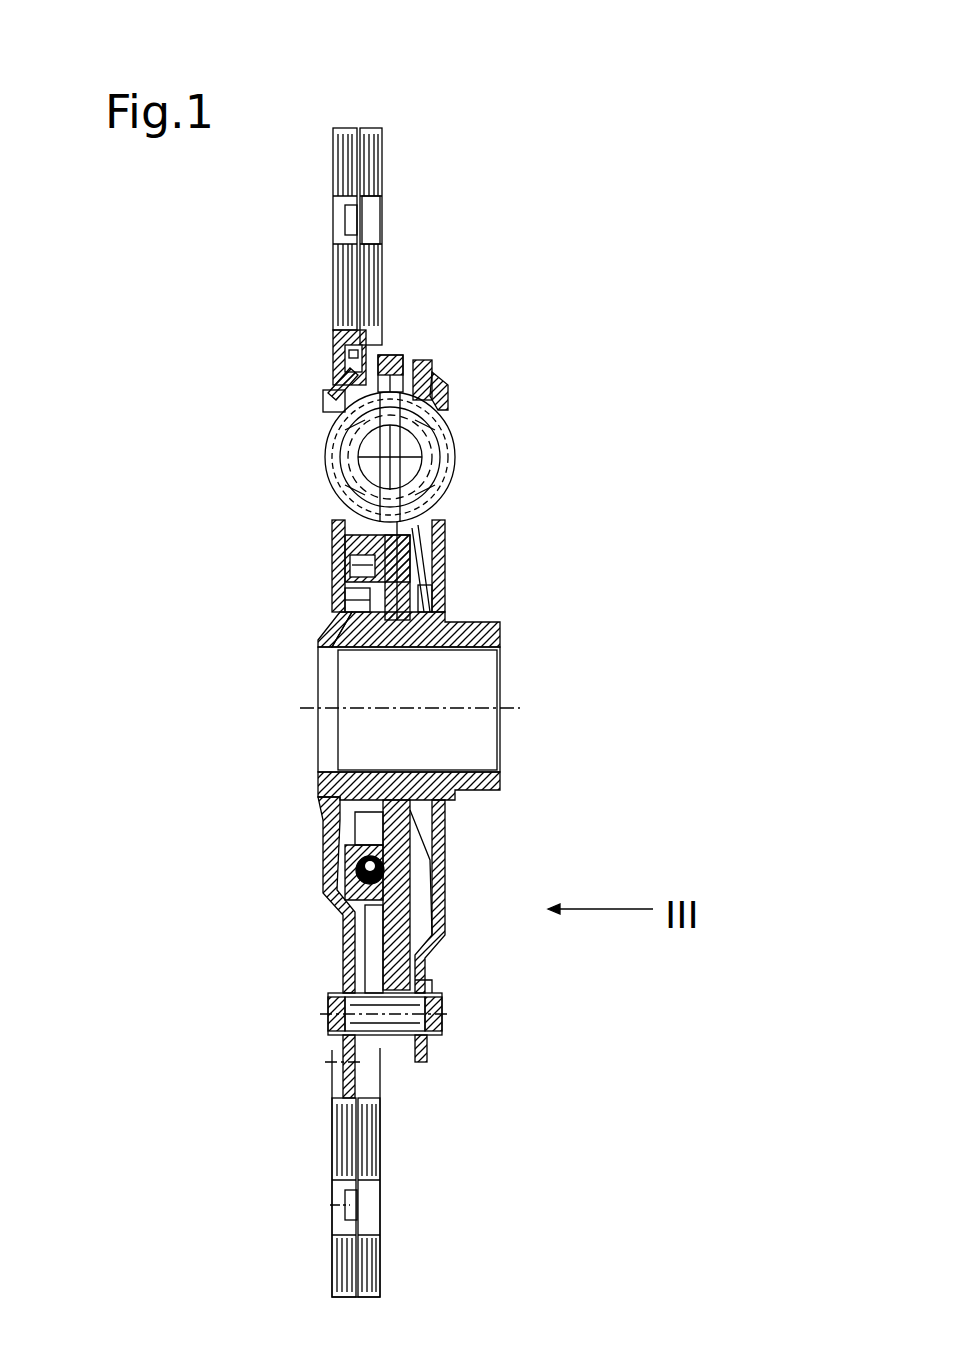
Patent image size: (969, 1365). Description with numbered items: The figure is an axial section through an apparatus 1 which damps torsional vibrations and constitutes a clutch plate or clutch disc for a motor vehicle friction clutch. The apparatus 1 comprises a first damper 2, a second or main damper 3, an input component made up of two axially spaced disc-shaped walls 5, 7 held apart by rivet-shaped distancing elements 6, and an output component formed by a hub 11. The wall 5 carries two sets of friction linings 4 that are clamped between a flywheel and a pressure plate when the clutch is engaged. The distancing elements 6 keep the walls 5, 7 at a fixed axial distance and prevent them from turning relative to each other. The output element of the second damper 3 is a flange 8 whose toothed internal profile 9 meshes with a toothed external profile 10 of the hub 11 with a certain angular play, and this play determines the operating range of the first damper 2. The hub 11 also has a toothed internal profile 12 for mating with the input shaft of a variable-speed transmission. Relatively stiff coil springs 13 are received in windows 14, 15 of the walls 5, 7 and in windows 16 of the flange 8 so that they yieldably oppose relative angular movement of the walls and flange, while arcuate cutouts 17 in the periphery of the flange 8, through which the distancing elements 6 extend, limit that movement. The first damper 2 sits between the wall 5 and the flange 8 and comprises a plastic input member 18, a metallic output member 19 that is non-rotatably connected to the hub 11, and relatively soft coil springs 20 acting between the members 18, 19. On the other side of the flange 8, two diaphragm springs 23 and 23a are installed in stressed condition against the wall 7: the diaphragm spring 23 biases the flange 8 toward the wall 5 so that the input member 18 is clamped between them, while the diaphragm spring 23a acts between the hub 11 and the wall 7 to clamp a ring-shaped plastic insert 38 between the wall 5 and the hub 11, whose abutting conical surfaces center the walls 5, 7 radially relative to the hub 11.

The apparatus 1 is at (542, 65).
The first damper 2 is at (303, 869).
The second damper 3 is at (293, 464).
The friction linings 4 is at (366, 128).
The wall 5 is at (336, 330).
The distancing elements 6 is at (330, 995).
The wall 7 is at (425, 380).
The flange 8 is at (400, 357).
The toothed internal profile 9 is at (445, 585).
The toothed external profile 10 is at (327, 606).
The hub 11 is at (500, 630).
The toothed internal profile 12 is at (503, 650).
The coil springs 13 is at (455, 443).
The window 14 is at (330, 407).
The window 15 is at (448, 398).
The windows 16 is at (338, 372).
The arcuate cutouts 17 is at (440, 977).
The input member 18 is at (332, 542).
The output member 19 is at (332, 578).
The coil springs 20 is at (330, 888).
The diaphragm spring 23 is at (445, 545).
The diaphragm spring 23a is at (445, 606).
The plastic insert 38 is at (325, 622).